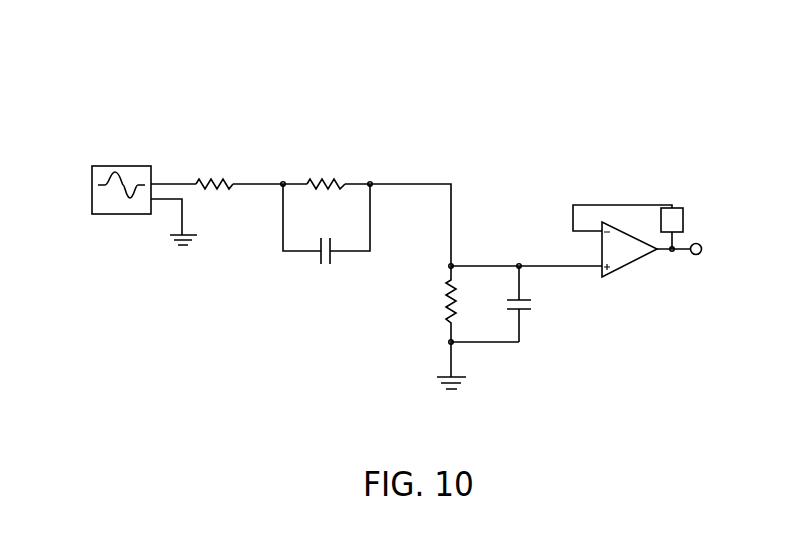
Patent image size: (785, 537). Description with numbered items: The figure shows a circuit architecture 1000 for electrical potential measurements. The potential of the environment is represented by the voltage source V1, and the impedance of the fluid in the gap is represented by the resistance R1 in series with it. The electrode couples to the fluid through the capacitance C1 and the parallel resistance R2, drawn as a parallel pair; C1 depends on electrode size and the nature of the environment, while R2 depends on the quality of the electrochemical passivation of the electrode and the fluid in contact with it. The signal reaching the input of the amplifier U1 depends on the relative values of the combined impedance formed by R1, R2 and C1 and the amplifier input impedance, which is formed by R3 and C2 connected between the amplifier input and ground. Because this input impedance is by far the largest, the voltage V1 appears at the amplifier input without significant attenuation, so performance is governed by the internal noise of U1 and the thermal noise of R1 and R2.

The circuit architecture 1000 is at (110, 52).
The voltage source V1 is at (121, 189).
The resistance R1 is at (215, 160).
The parallel resistance R2 is at (325, 160).
The capacitance C1 is at (326, 252).
The resistor R3 is at (433, 304).
The capacitor C2 is at (540, 304).
The amplifier U1 is at (629, 249).